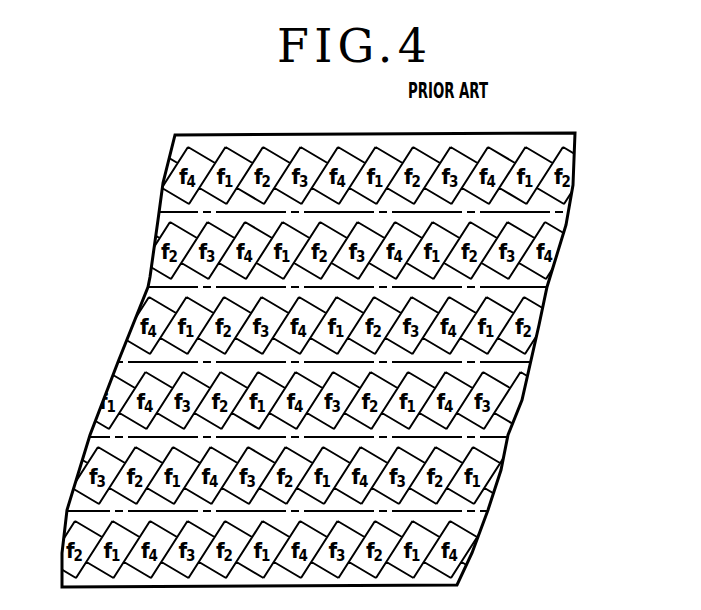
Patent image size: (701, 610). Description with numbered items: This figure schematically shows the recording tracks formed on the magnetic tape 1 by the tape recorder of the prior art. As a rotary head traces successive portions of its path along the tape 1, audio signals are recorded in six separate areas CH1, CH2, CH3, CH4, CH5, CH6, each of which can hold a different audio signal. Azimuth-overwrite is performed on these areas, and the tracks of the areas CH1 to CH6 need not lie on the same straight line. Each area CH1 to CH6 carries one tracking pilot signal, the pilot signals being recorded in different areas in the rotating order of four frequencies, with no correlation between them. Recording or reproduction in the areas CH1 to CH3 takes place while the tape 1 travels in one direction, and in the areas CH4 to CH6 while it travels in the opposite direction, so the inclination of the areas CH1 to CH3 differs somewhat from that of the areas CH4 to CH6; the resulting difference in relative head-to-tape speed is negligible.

The magnetic tape 1 is at (247, 135).
The audio signal recording area CH1 is at (460, 553).
The audio signal recording area CH2 is at (497, 473).
The audio signal recording area CH3 is at (515, 402).
The audio signal recording area CH4 is at (533, 328).
The audio signal recording area CH5 is at (556, 252).
The audio signal recording area CH6 is at (574, 183).